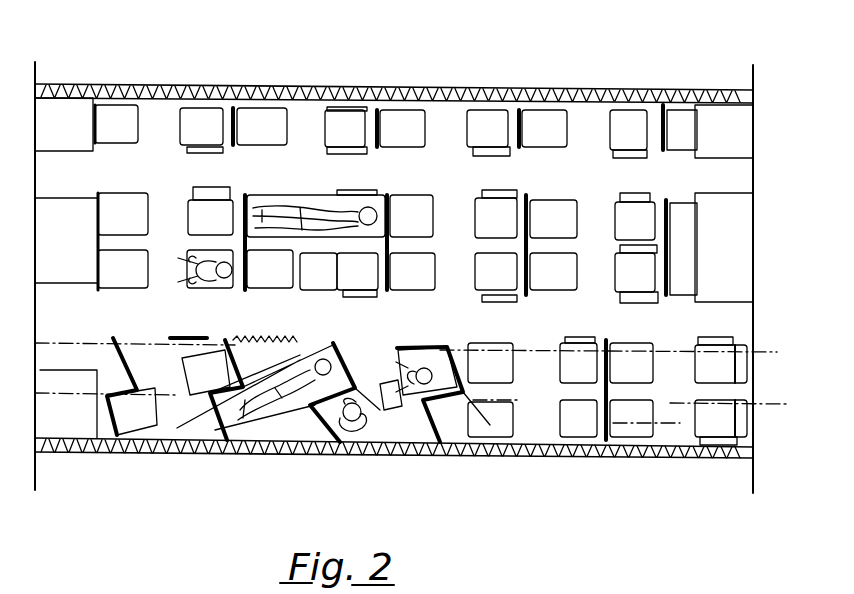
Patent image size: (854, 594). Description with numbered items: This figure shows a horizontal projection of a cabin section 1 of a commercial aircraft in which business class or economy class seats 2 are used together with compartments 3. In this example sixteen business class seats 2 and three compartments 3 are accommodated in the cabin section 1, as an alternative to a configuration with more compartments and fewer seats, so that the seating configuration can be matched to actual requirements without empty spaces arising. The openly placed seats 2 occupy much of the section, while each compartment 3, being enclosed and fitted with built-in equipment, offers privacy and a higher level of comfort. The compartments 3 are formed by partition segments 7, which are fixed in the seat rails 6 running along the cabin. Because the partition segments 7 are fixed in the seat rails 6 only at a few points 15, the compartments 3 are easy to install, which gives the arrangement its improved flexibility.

The cabin section 1 is at (489, 61).
The business class or economy class seats 2 is at (714, 476).
The compartment 3 is at (289, 486).
The seat rails 6 is at (790, 375).
The partition segments 7 is at (459, 482).
The fixing points 15 is at (400, 345).